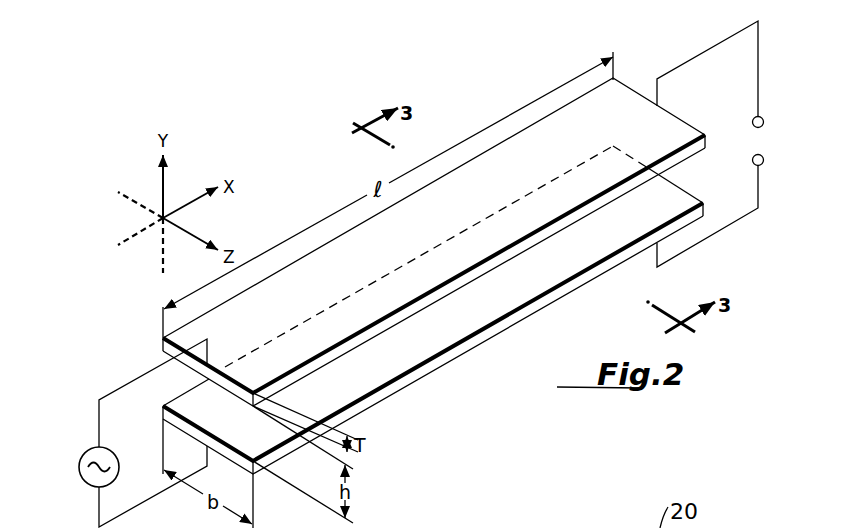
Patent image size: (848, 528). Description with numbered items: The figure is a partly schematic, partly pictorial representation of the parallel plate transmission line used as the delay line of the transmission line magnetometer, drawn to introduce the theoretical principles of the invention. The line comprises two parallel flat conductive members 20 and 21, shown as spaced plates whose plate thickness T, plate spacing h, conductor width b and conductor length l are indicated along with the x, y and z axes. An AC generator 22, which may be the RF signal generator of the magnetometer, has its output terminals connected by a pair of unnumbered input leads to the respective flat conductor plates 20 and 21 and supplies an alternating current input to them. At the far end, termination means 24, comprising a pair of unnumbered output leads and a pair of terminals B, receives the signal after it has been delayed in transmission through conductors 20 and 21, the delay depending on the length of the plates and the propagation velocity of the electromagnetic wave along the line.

The flat conductive member 20 is at (630, 88).
The flat conductive member 21 is at (498, 333).
The AC generator 22 is at (79, 466).
The termination means 24 is at (770, 80).